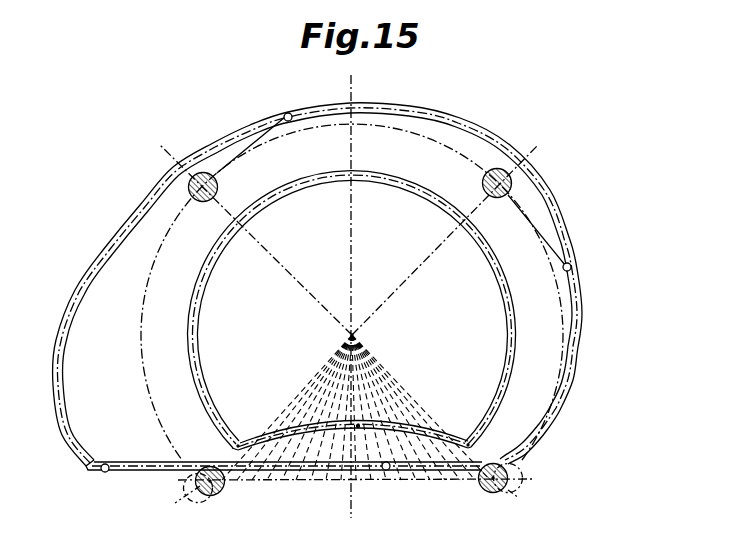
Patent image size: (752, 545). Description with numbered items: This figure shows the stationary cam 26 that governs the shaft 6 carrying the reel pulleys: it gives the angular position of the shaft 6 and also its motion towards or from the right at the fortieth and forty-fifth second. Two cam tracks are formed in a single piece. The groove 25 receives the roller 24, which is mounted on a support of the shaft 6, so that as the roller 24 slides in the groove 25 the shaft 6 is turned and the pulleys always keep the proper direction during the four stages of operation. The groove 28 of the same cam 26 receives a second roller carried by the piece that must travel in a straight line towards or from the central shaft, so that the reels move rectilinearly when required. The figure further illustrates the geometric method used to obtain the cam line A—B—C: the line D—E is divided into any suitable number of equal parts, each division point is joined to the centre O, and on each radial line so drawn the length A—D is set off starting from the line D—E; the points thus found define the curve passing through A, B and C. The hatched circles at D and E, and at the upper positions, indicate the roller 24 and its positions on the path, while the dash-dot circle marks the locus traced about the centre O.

The shaft 6 is at (201, 175).
The roller 24 is at (291, 114).
The groove 25 is at (545, 426).
The stationary cam 26 is at (470, 176).
The groove 28 is at (512, 374).
The centre O is at (367, 333).
The point A is at (238, 441).
The point B is at (360, 426).
The point C is at (468, 440).
The point D is at (203, 496).
The point E is at (497, 499).